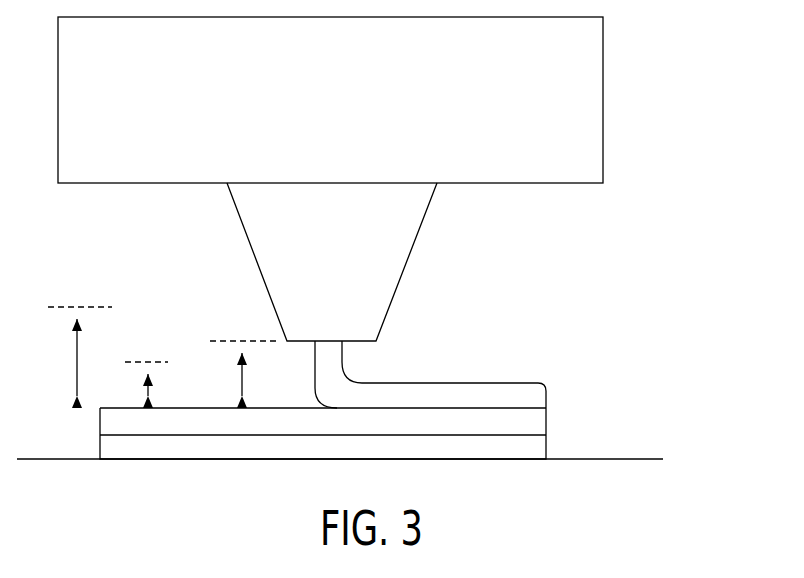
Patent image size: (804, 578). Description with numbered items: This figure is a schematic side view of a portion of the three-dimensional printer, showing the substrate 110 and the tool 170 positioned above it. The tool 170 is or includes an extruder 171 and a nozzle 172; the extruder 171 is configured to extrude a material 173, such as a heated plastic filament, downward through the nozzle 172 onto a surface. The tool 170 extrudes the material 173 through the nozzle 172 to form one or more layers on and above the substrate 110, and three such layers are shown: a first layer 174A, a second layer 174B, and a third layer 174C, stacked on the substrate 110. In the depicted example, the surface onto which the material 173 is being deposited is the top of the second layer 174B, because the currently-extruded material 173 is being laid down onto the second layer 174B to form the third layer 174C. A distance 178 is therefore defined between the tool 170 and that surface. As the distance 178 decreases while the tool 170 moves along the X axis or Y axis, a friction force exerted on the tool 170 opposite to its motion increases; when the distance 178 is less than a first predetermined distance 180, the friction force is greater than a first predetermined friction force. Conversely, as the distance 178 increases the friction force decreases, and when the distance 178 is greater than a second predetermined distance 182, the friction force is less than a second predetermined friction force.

The substrate 110 is at (650, 459).
The tool 170 is at (384, 179).
The extruder 171 is at (603, 141).
The nozzle 172 is at (412, 253).
The material 173 is at (348, 386).
The first layer 174A is at (546, 450).
The second layer 174B is at (546, 425).
The third layer 174C is at (546, 396).
The distance 178 is at (240, 373).
The first predetermined distance 180 is at (146, 385).
The second predetermined distance 182 is at (77, 360).